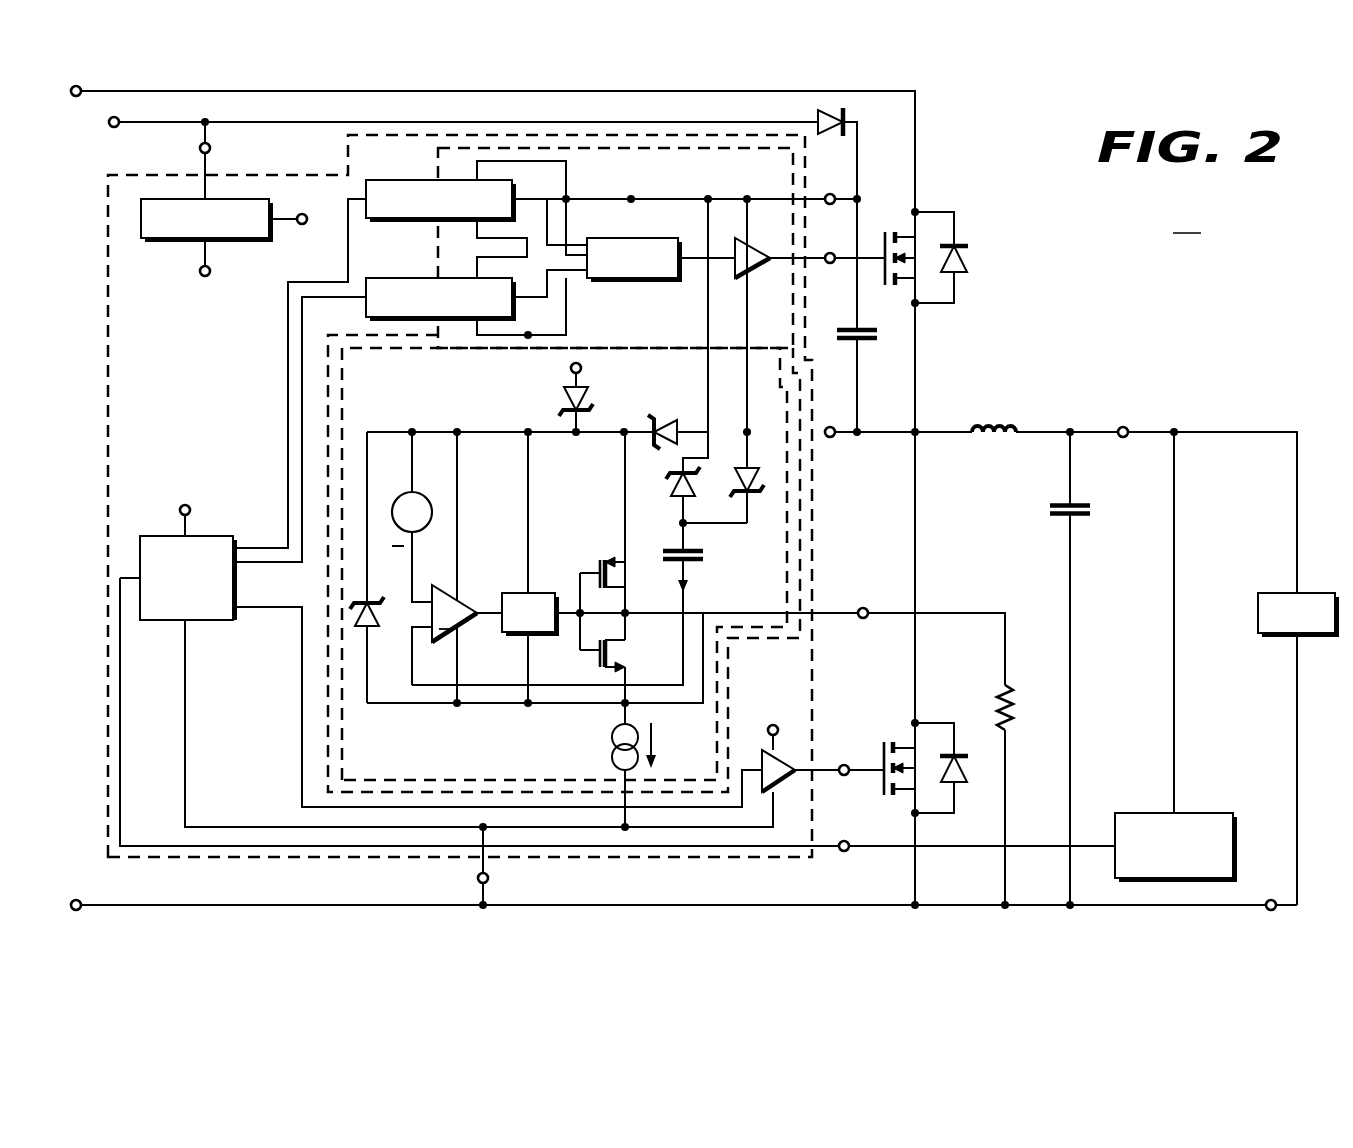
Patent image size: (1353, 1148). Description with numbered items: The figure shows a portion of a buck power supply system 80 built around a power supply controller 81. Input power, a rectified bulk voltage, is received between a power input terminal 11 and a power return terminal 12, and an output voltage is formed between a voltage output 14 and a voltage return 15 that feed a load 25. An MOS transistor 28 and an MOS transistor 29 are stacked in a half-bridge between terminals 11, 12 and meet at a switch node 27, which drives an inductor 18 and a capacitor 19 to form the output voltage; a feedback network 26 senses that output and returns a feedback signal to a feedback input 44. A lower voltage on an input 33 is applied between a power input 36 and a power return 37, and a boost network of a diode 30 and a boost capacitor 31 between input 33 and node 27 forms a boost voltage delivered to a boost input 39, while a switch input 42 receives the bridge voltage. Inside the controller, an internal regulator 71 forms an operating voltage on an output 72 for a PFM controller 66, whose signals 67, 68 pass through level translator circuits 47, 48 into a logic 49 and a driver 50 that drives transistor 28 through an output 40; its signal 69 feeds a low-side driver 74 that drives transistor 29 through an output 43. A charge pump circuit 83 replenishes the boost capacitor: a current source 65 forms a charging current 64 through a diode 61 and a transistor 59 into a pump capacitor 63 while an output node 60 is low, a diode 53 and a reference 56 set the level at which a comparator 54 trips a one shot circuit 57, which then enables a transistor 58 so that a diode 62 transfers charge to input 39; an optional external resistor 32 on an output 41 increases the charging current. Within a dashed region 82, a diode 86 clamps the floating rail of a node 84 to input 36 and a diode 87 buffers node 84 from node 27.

The power input terminal 11 is at (76, 97).
The power return terminal 12 is at (76, 899).
The voltage output 14 is at (1123, 426).
The voltage return 15 is at (1271, 899).
The inductor 18 is at (991, 417).
The capacitor 19 is at (1049, 507).
The load 25 is at (1258, 612).
The feedback network 26 is at (1210, 812).
The switch node 27 is at (912, 437).
The MOS transistor 28 is at (976, 214).
The MOS transistor 29 is at (953, 706).
The diode 30 is at (851, 113).
The boost capacitor 31 is at (869, 345).
The external resistor 32 is at (1016, 708).
The input 33 is at (114, 128).
The power input 36 is at (211, 149).
The power return 37 is at (205, 277).
The boost input 39 is at (830, 193).
The output 40 is at (830, 252).
The output 41 is at (863, 607).
The switch input 42 is at (831, 438).
The output 43 is at (844, 764).
The feedback input 44 is at (844, 840).
The level translator circuit 47 is at (395, 179).
The level translator circuit 48 is at (395, 277).
The logic 49 is at (601, 280).
The driver 50 is at (758, 251).
The diode 53 is at (372, 630).
The comparator 54 is at (470, 630).
The reference 56 is at (425, 495).
The one shot circuit 57 is at (506, 592).
The transistor 58 is at (597, 567).
The transistor 59 is at (596, 656).
The output node 60 is at (628, 615).
The diode 61 is at (753, 502).
The diode 62 is at (678, 506).
The pump capacitor 63 is at (705, 556).
The charging current 64 is at (689, 589).
The current source 65 is at (610, 744).
The PFM controller 66 is at (224, 622).
The signal 67 is at (288, 524).
The signal 68 is at (265, 563).
The signal 69 is at (302, 641).
The internal regulator 71 is at (157, 241).
The output 72 is at (302, 225).
The low-side driver 74 is at (784, 789).
The power supply system 80 is at (701, 498).
The power supply controller 81 is at (108, 428).
The low-side circuit 82 is at (729, 662).
The charge pump circuit 83 is at (669, 346).
The node 84 is at (491, 430).
The diode 86 is at (590, 401).
The diode 87 is at (666, 420).